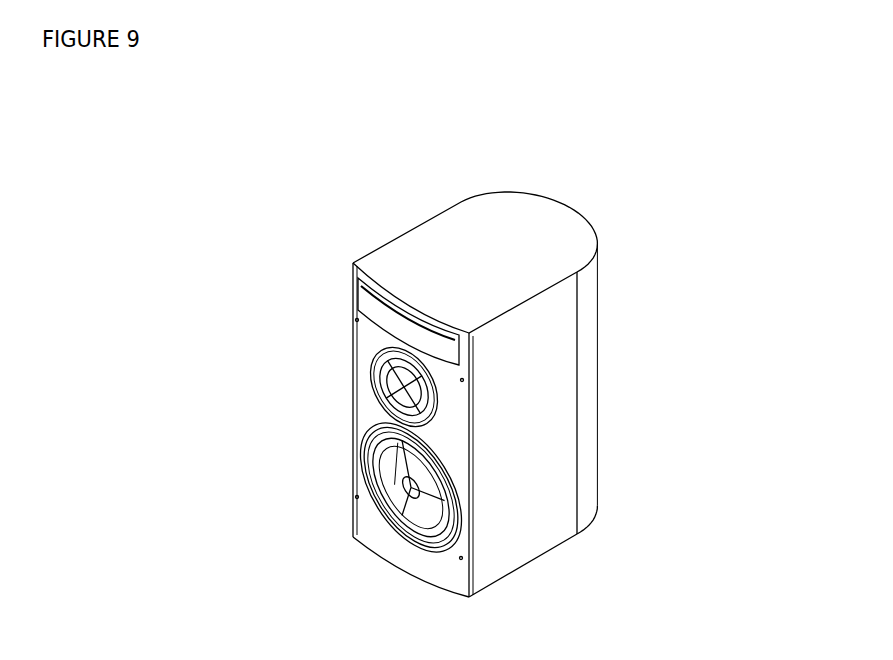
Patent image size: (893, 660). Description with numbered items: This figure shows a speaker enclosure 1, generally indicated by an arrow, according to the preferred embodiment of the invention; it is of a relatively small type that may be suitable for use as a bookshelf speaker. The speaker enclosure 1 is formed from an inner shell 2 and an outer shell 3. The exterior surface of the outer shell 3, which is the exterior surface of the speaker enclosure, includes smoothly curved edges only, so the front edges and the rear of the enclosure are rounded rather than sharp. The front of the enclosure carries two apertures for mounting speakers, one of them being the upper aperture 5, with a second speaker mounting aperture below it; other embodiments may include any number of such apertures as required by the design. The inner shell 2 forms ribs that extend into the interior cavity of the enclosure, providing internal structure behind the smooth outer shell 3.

The speaker enclosure 1 is at (486, 400).
The inner shell 2 is at (411, 511).
The outer shell 3 is at (478, 262).
The aperture 5 is at (393, 368).